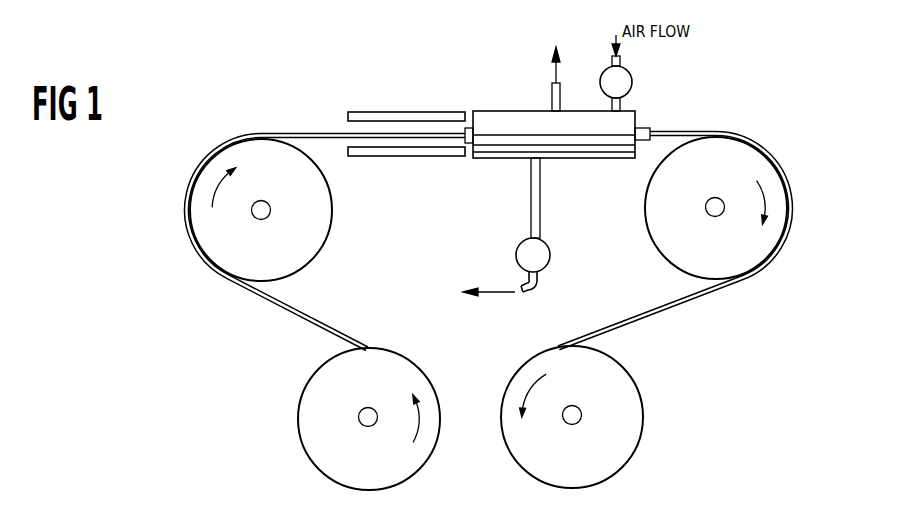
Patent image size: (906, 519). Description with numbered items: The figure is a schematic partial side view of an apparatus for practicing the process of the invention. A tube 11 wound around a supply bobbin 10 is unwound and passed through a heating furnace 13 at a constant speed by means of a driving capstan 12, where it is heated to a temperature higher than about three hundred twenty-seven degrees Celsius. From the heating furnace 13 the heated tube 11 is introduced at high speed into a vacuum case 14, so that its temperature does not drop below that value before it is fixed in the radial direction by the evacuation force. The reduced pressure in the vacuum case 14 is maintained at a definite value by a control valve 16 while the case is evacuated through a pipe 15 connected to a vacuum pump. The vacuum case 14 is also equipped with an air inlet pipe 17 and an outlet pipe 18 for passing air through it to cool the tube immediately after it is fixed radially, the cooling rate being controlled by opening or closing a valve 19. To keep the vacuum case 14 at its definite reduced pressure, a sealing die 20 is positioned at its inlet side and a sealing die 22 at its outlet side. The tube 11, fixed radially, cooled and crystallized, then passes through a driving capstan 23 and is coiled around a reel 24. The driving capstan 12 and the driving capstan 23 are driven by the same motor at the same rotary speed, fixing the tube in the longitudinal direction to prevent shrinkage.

The supply bobbin 10 is at (338, 426).
The tube 11 is at (318, 322).
The driving capstan 12 is at (302, 220).
The heating furnace 13 is at (395, 111).
The vacuum case 14 is at (522, 120).
The pipe 15 is at (541, 211).
The control valve 16 is at (550, 256).
The air inlet pipe 17 is at (621, 103).
The outlet pipe 18 is at (560, 100).
The valve 19 is at (635, 71).
The sealing die 20 is at (470, 147).
The sealing die 22 is at (643, 143).
The driving capstan 23 is at (685, 216).
The reel 24 is at (628, 424).